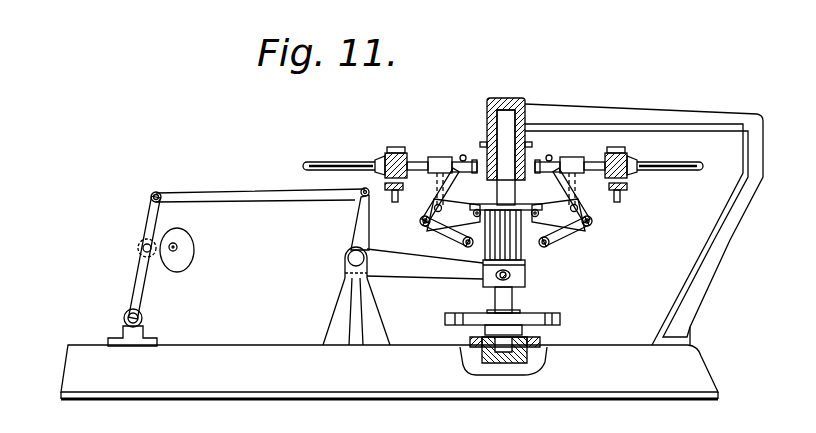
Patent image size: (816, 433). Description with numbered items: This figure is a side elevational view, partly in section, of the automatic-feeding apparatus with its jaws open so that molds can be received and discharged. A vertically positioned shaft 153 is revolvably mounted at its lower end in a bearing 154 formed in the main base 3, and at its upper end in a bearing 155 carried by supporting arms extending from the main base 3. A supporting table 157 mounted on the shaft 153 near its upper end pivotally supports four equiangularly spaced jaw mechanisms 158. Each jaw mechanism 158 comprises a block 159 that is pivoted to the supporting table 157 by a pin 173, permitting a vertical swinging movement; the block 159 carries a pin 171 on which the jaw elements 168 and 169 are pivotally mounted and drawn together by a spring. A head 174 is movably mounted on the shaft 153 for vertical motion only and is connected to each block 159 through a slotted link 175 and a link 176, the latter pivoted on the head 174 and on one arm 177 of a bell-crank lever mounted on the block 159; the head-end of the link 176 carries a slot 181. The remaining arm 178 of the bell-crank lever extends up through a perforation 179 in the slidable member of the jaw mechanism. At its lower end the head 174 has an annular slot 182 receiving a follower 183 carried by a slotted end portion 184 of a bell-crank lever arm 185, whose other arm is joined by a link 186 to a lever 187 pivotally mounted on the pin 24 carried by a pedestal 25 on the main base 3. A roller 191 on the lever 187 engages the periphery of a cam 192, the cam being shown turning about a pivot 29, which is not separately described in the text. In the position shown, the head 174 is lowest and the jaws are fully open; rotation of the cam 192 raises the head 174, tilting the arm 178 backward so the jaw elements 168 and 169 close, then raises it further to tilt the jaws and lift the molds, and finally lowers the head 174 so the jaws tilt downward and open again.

The main base 3 is at (233, 347).
The pin 24 is at (142, 318).
The pedestal 25 is at (125, 325).
The cam pivot 29 is at (176, 246).
The shaft 153 is at (512, 303).
The bearing 154 is at (503, 364).
The bearing 155 is at (509, 97).
The supporting table 157 is at (621, 196).
The jaw mechanisms 158 is at (625, 121).
The block 159 is at (448, 158).
The jaw element 168 is at (703, 162).
The jaw element 169 is at (325, 161).
The pin 171 is at (627, 188).
The pin 173 is at (465, 155).
The head 174 is at (532, 252).
The link 175 is at (506, 199).
The link 176 is at (446, 234).
The arm 177 is at (428, 214).
The arm 178 is at (440, 182).
The perforation 179 is at (433, 158).
The slot 181 is at (450, 254).
The annular slot 182 is at (490, 284).
The follower 183 is at (525, 282).
The slotted end portion 184 is at (390, 266).
The bell-crank lever arm 185 is at (357, 215).
The link 186 is at (255, 193).
The lever 187 is at (152, 208).
The roller 191 is at (138, 248).
The cam 192 is at (190, 257).